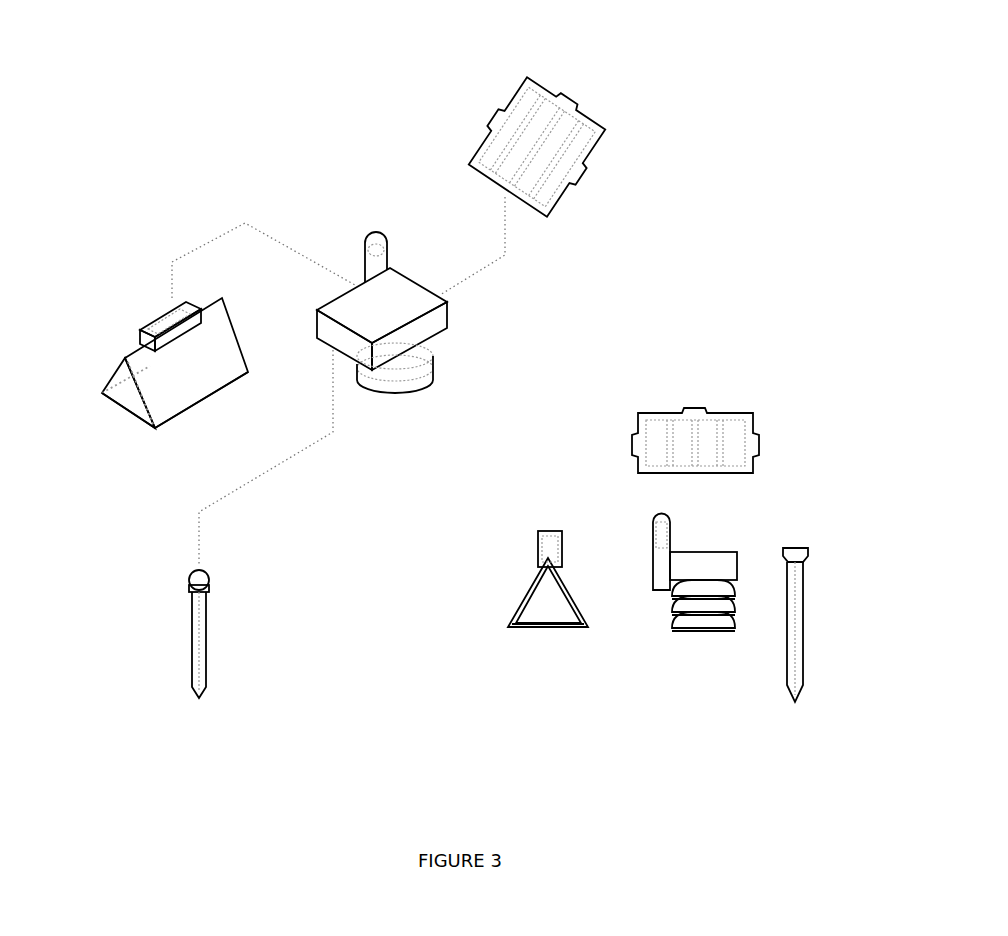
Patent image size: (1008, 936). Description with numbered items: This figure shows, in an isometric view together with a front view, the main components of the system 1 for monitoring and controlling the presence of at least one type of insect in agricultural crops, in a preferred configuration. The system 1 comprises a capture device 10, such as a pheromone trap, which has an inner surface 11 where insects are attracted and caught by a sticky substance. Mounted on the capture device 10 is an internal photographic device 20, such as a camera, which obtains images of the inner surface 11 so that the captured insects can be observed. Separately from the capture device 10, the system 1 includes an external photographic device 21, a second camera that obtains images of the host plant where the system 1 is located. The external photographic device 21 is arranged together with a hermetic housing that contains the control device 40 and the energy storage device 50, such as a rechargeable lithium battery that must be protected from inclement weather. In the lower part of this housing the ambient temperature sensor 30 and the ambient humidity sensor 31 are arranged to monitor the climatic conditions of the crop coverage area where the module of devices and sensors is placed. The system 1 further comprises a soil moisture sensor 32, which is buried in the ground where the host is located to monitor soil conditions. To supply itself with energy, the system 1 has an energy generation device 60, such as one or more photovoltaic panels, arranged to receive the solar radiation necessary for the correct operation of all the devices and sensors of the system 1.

The system to monitor and control the presence of insects in agricultural crops 1 is at (205, 84).
The capture device 10 is at (305, 494).
The inner surface 11 is at (133, 407).
The internal photographic device 20 is at (162, 318).
The external photographic device 21 is at (362, 238).
The ambient temperature sensor 30 is at (546, 519).
The ambient humidity sensor 31 is at (433, 360).
The soil moisture sensor 32 is at (210, 585).
The control device 40 is at (558, 424).
The energy storage device 50 is at (445, 310).
The energy generation device 60 is at (605, 137).